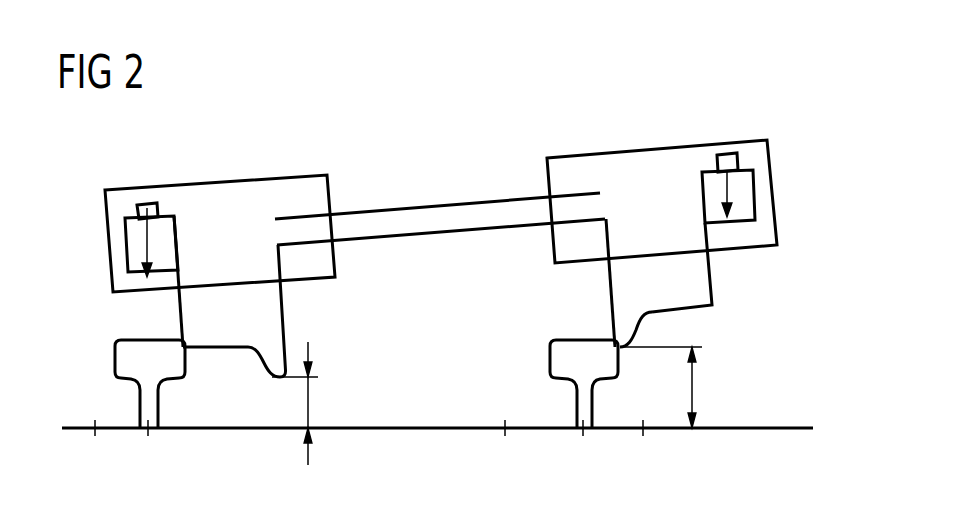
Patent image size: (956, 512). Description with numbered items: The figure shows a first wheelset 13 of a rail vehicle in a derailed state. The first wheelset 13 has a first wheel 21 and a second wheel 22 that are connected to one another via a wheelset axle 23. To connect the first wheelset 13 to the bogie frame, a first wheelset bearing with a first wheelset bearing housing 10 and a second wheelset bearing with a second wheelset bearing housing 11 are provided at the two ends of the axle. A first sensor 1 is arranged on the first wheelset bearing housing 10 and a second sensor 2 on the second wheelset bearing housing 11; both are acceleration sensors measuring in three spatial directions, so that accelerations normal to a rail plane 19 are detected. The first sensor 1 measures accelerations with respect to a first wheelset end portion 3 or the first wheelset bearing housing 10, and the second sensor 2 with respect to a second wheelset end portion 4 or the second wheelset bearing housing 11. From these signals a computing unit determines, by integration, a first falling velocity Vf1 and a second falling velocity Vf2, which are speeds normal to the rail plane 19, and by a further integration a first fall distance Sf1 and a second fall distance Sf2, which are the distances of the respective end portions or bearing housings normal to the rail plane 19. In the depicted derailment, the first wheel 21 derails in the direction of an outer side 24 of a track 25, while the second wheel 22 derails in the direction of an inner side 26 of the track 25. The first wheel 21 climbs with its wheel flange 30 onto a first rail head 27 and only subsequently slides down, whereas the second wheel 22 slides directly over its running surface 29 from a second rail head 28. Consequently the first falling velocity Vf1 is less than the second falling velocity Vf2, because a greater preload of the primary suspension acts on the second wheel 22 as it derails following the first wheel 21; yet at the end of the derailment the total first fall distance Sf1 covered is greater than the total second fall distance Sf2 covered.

The first sensor 1 is at (723, 154).
The second sensor 2 is at (147, 203).
The first wheelset end portion 3 is at (653, 160).
The second wheelset end portion 4 is at (222, 191).
The first wheelset bearing housing 10 is at (753, 207).
The second wheelset bearing housing 11 is at (138, 255).
The first wheelset 13 is at (412, 236).
The rail plane 19 is at (423, 429).
The first wheel 21 is at (705, 283).
The second wheel 22 is at (282, 315).
The wheelset axle 23 is at (448, 214).
The outer side 24 is at (97, 420).
The track 25 is at (150, 422).
The inner side 26 is at (507, 417).
The first rail head 27 is at (583, 339).
The second rail head 28 is at (147, 339).
The running surface 29 is at (222, 349).
The wheel flange 30 is at (634, 330).
The first falling velocity Vf1 is at (727, 183).
The second falling velocity Vf2 is at (148, 233).
The first fall distance Sf1 is at (693, 385).
The second fall distance Sf2 is at (310, 400).